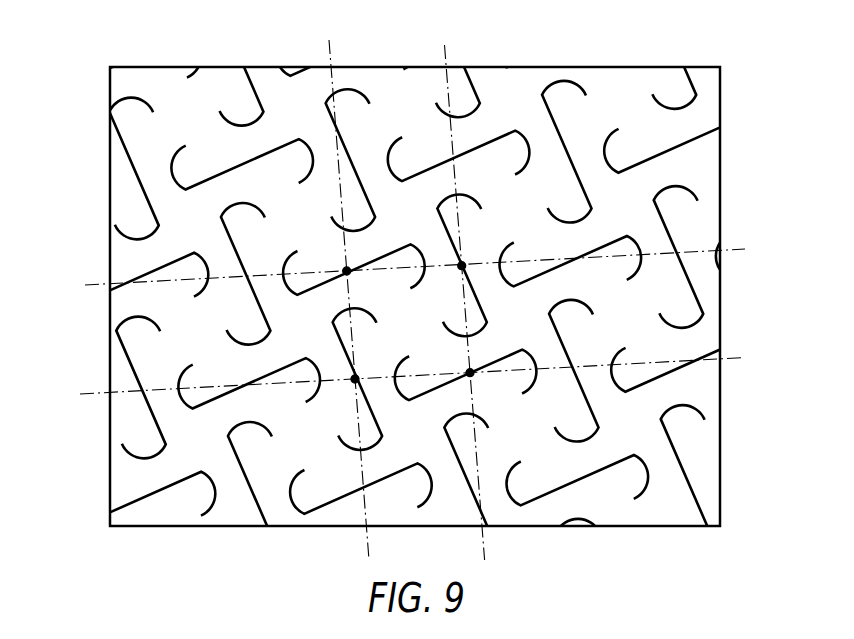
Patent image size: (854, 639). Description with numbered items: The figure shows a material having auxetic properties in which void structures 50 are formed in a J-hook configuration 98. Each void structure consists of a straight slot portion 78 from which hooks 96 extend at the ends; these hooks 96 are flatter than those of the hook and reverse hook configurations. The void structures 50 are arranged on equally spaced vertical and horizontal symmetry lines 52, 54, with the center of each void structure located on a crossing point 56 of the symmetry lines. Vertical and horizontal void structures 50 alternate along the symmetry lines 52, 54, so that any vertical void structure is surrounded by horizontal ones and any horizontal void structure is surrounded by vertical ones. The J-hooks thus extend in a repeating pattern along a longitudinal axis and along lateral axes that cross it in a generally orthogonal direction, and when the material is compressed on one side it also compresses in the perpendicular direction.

The void structures 50 is at (687, 142).
The vertical symmetry lines 52 is at (430, 315).
The horizontal symmetry lines 54 is at (401, 286).
The crossing point 56 is at (347, 271).
The slot portion 78 is at (222, 173).
The hooks 96 is at (562, 82).
The J-hook configuration 98 is at (497, 125).